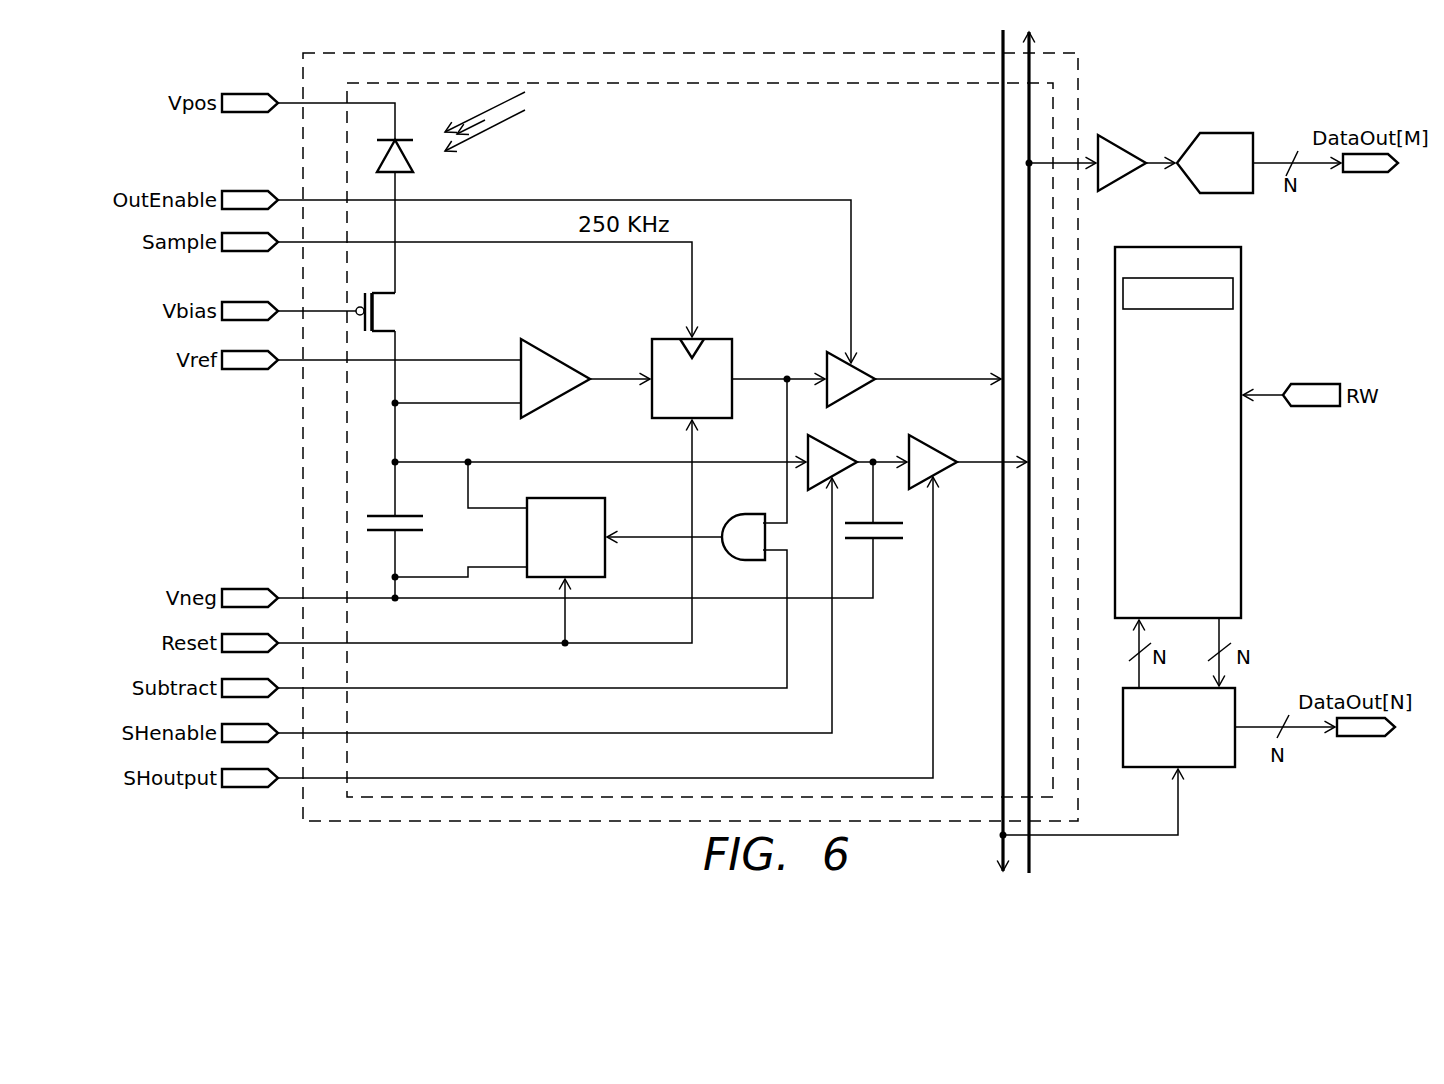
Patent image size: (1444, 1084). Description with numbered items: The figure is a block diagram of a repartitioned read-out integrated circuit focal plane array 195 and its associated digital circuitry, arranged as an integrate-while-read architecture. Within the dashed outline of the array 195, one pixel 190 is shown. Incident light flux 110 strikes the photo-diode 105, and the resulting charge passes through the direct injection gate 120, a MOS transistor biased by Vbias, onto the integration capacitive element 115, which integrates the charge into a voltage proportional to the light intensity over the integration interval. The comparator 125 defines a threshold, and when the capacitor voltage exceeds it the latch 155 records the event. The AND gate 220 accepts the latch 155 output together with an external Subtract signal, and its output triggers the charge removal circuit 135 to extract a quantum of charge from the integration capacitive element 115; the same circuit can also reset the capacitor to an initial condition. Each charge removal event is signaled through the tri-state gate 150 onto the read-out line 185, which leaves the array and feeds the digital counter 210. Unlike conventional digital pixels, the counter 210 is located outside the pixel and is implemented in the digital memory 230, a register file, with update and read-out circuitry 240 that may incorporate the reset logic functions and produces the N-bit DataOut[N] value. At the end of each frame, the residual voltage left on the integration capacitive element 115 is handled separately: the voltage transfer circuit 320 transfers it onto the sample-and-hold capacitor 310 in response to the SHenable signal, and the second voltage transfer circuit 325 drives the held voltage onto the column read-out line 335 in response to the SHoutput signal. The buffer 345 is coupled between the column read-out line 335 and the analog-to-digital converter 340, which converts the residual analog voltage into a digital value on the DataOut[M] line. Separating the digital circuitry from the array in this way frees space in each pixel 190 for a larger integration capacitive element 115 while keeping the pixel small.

The photo-diode 105 is at (412, 172).
The flux 110 is at (495, 122).
The integration capacitive element 115 is at (400, 515).
The direct injection gate 120 is at (385, 326).
The comparator 125 is at (540, 355).
The charge removal circuit 135 is at (605, 500).
The tri-state gate 150 is at (862, 370).
The latch 155 is at (720, 339).
The read-out line 185 is at (1003, 288).
The pixel 190 is at (1051, 218).
The focal plane array 195 is at (1081, 86).
The digital counter 210 is at (1233, 282).
The AND gate 220 is at (757, 561).
The digital memory 230 is at (1244, 325).
The update and read-out circuitry 240 is at (1208, 768).
The sample-and-hold capacitor 310 is at (893, 540).
The voltage transfer circuit 320 is at (830, 450).
The second voltage transfer circuit 325 is at (935, 447).
The column read-out line 335 is at (1027, 112).
The analog-to-digital converter 340 is at (1222, 133).
The buffer 345 is at (1118, 182).